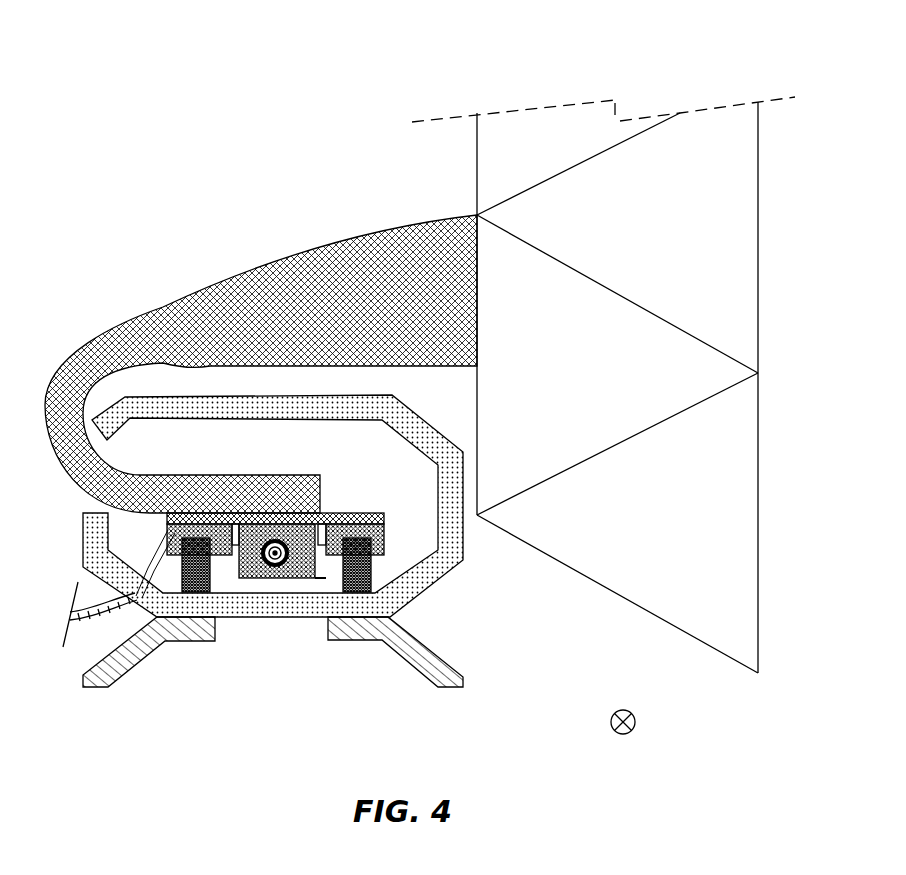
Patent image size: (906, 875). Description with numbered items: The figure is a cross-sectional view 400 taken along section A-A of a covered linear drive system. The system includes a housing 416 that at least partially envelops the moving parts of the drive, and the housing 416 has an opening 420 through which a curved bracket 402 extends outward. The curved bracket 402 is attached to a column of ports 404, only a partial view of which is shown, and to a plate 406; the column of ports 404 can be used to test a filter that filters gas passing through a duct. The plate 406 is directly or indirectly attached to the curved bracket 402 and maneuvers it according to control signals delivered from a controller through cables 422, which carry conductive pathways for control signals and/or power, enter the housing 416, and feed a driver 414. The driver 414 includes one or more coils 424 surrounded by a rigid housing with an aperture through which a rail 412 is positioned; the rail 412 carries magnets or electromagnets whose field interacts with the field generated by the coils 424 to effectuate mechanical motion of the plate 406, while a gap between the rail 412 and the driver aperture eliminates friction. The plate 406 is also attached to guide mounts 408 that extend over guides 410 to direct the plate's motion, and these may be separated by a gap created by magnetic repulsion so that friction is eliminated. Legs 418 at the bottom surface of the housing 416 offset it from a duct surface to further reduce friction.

The cross-sectional view 400 is at (168, 92).
The curved bracket 402 is at (200, 292).
The column of ports 404 is at (576, 377).
The plate 406 is at (362, 507).
The guide mounts 408 is at (385, 527).
The guides 410 is at (373, 565).
The rail 412 is at (295, 579).
The driver 414 is at (322, 579).
The housing 416 is at (450, 570).
The legs 418 is at (137, 677).
The opening 420 is at (120, 452).
The cables 422 is at (90, 598).
The coils 424 is at (277, 578).